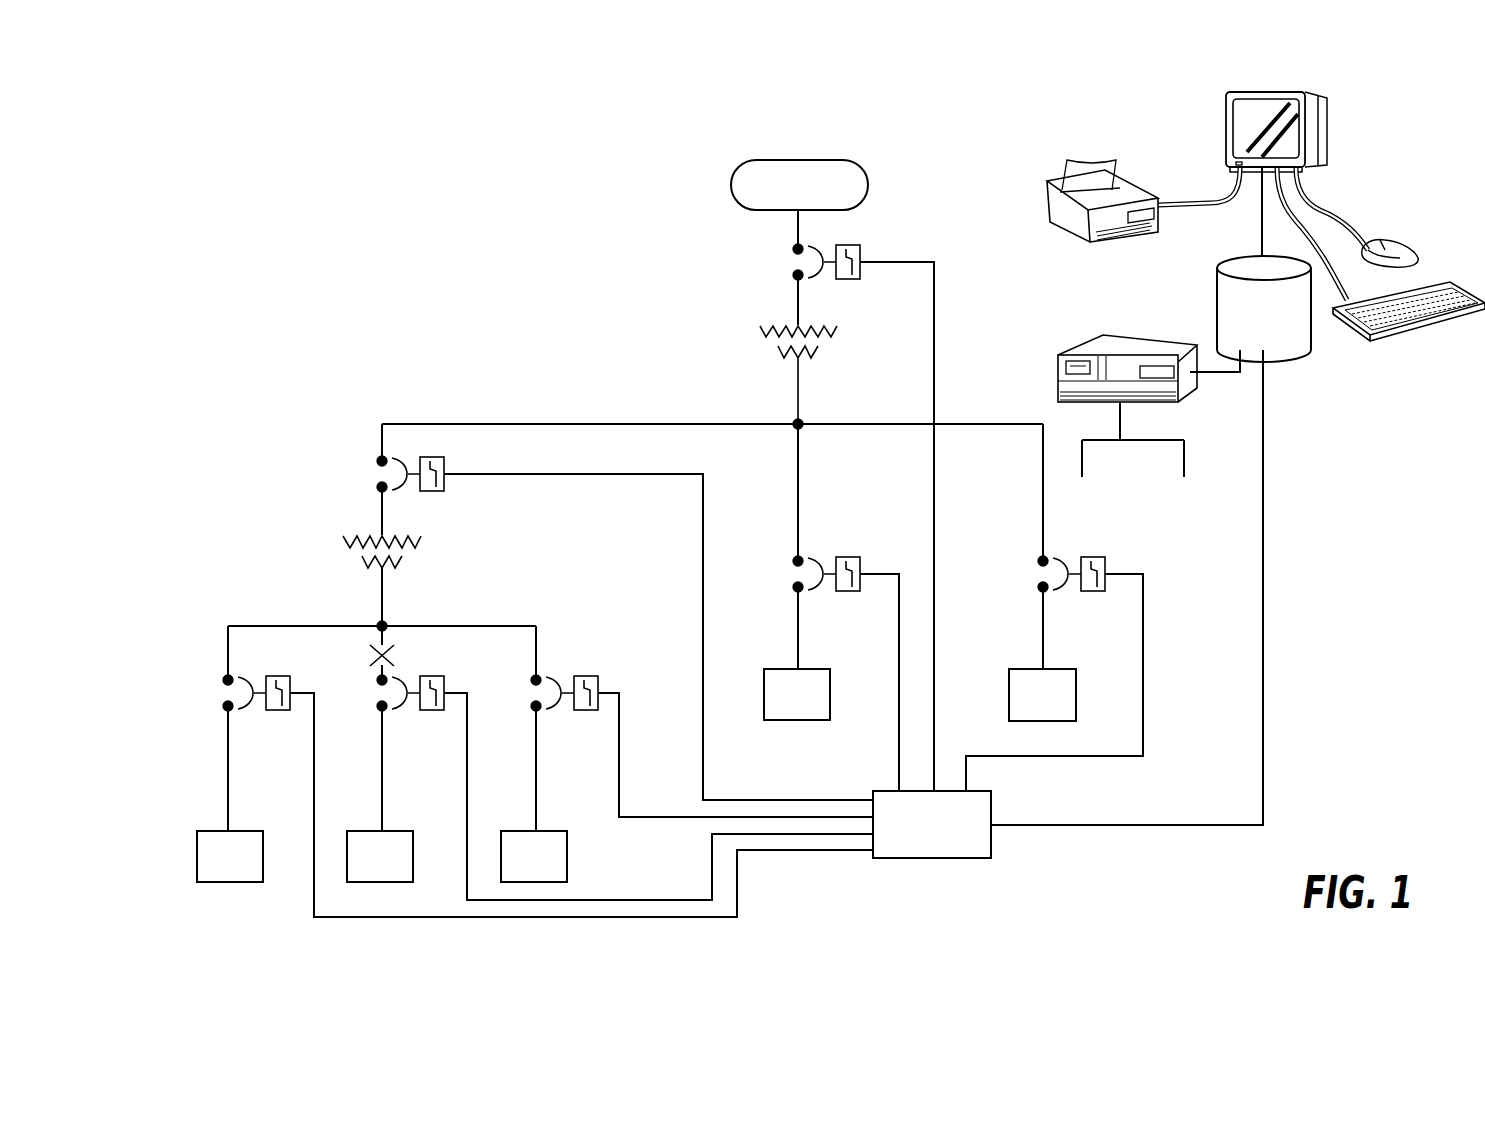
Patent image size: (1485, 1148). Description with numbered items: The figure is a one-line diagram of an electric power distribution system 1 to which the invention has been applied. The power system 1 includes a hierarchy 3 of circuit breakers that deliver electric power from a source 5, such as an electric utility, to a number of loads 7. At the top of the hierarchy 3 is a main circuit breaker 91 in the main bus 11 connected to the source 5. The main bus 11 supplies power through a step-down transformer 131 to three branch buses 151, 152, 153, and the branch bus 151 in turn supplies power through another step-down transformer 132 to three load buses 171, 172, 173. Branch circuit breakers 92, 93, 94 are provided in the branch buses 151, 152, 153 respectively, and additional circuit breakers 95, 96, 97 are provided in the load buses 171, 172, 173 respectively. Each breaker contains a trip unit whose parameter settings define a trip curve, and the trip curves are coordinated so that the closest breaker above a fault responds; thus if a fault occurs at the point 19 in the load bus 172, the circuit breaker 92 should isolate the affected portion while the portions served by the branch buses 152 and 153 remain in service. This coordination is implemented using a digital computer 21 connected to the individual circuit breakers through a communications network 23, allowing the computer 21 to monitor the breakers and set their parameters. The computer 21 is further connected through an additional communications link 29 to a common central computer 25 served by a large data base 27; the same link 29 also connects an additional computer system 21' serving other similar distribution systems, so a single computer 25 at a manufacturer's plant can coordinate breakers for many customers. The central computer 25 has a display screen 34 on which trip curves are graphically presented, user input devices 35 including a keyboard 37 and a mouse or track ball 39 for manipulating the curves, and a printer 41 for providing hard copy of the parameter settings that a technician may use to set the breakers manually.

The electric power distribution system 1 is at (557, 358).
The hierarchy of circuit breakers 3 is at (893, 240).
The source 5 is at (818, 160).
The loads 7 is at (263, 860).
The main circuit breaker 91 is at (860, 280).
The branch circuit breaker 92 is at (444, 488).
The branch circuit breaker 93 is at (848, 557).
The branch circuit breaker 94 is at (1093, 557).
The additional circuit breaker 95 is at (278, 676).
The additional circuit breaker 96 is at (444, 682).
The additional circuit breaker 97 is at (586, 676).
The main bus 11 is at (798, 296).
The step-down transformer 131 is at (766, 330).
The step-down transformer 132 is at (418, 546).
The branch bus 151 is at (382, 506).
The branch bus 152 is at (798, 627).
The branch bus 153 is at (1043, 627).
The load bus 171 is at (228, 745).
The load bus 172 is at (382, 745).
The load bus 173 is at (536, 745).
The fault point 19 is at (398, 656).
The digital computer 21 is at (938, 843).
The additional computer system 21' is at (1133, 396).
The communications network 23 is at (817, 857).
The central computer 25 is at (1226, 146).
The data base 27 is at (1311, 340).
The communications link 29 is at (1263, 447).
The display screen 34 is at (1248, 121).
The user input devices 35 is at (1398, 220).
The keyboard 37 is at (1422, 326).
The mouse or track ball 39 is at (1404, 240).
The printer 41 is at (1070, 232).